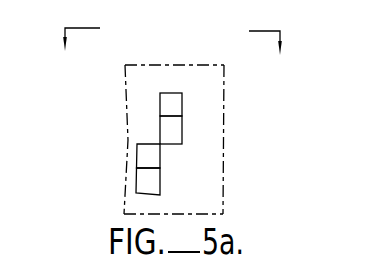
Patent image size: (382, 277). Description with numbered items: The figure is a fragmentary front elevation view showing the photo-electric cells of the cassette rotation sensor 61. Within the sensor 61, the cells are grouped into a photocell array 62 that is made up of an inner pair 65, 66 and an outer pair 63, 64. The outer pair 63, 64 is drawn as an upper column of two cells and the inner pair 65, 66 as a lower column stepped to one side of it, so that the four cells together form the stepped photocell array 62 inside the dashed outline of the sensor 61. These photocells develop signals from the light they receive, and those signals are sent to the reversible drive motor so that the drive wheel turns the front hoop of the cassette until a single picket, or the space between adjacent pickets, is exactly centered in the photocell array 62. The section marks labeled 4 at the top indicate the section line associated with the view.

The section line 4- 4 is at (172, 54).
The sensor 61 is at (215, 188).
The photocell array 62 is at (153, 138).
The outer pair photocell 63 is at (177, 104).
The outer pair photocell 64 is at (177, 130).
The inner pair photocell 65 is at (143, 154).
The inner pair photocell 66 is at (143, 180).